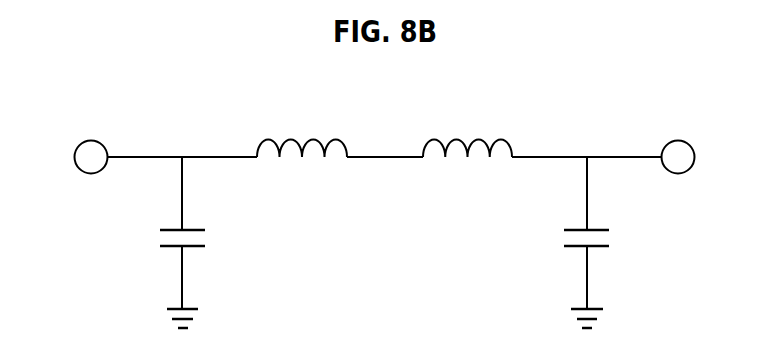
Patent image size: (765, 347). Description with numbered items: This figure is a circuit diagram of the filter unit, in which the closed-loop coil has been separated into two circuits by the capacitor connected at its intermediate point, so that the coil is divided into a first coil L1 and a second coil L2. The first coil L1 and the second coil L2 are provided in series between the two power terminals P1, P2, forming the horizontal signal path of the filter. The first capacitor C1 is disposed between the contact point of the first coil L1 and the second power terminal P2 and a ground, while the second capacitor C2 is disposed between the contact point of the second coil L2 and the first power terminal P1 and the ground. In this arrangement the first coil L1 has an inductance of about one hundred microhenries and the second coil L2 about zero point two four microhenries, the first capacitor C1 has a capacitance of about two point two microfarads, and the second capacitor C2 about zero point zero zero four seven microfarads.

The first power terminal P1 is at (697, 157).
The second power terminal P2 is at (72, 157).
The first coil L1 is at (302, 126).
The second coil L2 is at (467, 126).
The first capacitor C1 is at (202, 242).
The second capacitor C2 is at (607, 242).